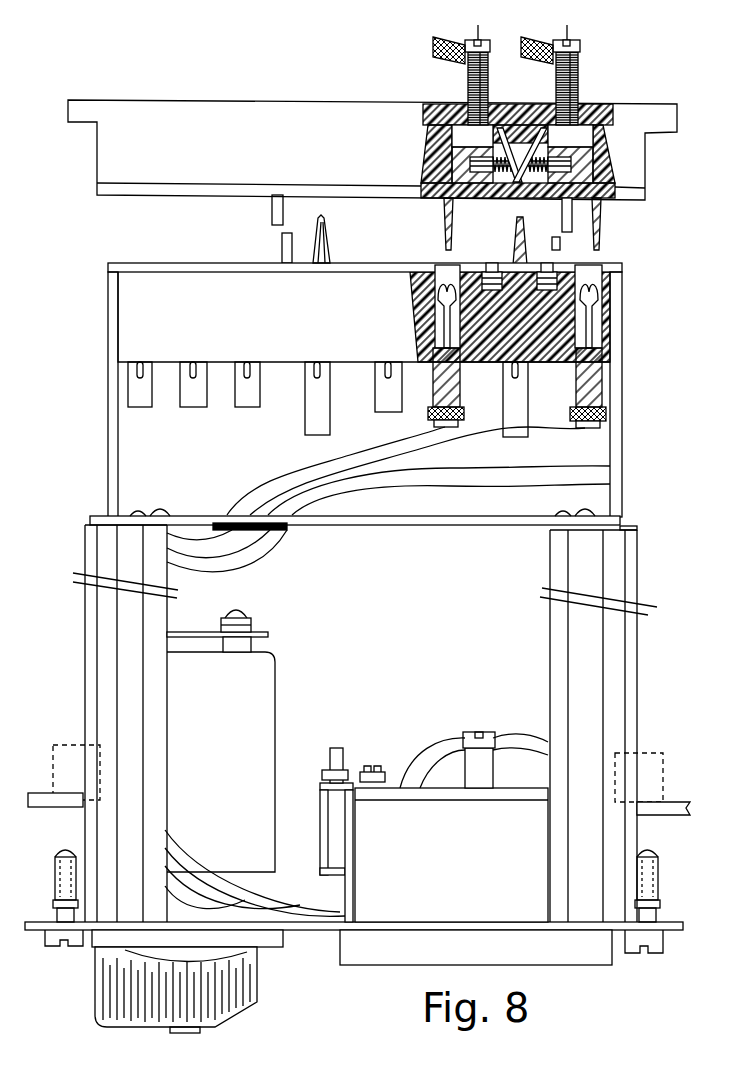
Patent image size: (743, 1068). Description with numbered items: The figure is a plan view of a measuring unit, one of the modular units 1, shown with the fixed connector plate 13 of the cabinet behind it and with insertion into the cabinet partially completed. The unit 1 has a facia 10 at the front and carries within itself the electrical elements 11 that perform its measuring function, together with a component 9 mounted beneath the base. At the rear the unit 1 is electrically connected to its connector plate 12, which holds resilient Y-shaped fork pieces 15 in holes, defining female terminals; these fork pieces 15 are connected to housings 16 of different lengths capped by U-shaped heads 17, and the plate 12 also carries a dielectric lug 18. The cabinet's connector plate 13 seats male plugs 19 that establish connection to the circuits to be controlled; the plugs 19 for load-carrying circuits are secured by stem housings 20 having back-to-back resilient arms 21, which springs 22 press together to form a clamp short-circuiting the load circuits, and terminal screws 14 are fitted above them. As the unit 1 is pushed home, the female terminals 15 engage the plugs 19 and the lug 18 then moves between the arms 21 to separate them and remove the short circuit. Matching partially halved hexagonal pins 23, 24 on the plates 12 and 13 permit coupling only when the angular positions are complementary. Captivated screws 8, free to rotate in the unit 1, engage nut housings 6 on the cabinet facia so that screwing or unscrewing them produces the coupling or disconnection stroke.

The modular unit 1 is at (85, 617).
The nut housing 6 is at (60, 775).
The captivated screw 8 is at (64, 866).
The capacitor 9 is at (345, 950).
The facia 10 is at (573, 932).
The electrical elements 11 is at (417, 877).
The connector plate 12 is at (140, 318).
The connector plate 13 is at (118, 150).
The terminal screw 14 is at (577, 82).
The fork piece 15 is at (598, 328).
The housing 16 is at (600, 392).
The U-shaped head 17 is at (598, 424).
The dielectric lug 18 is at (523, 253).
The male plug 19 is at (613, 192).
The stem housing 20 is at (585, 137).
The resilient arm 21 is at (520, 150).
The spring 22 is at (500, 165).
The hexagonal pin 23 is at (292, 233).
The hexagonal pin 24 is at (277, 222).